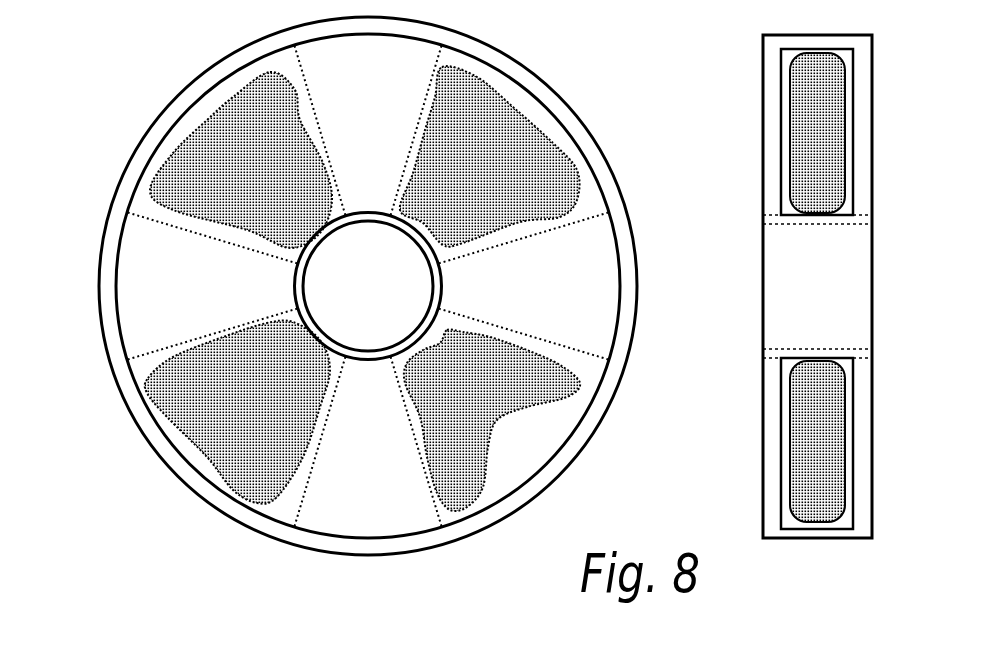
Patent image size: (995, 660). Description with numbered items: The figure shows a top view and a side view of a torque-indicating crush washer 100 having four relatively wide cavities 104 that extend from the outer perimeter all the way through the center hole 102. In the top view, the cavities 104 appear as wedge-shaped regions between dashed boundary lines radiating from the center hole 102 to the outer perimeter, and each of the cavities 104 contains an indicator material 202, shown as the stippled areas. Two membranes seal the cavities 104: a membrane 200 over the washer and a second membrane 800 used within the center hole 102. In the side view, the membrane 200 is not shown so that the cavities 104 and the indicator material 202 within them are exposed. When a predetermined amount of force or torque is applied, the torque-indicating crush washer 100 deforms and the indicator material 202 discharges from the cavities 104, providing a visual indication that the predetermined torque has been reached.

The torque-indicating crush washer 100 is at (620, 94).
The center hole 102 is at (389, 300).
The cavities 104 is at (781, 127).
The membrane 200 is at (157, 117).
The indicator material 202 is at (284, 190).
The second membrane 800 is at (297, 295).